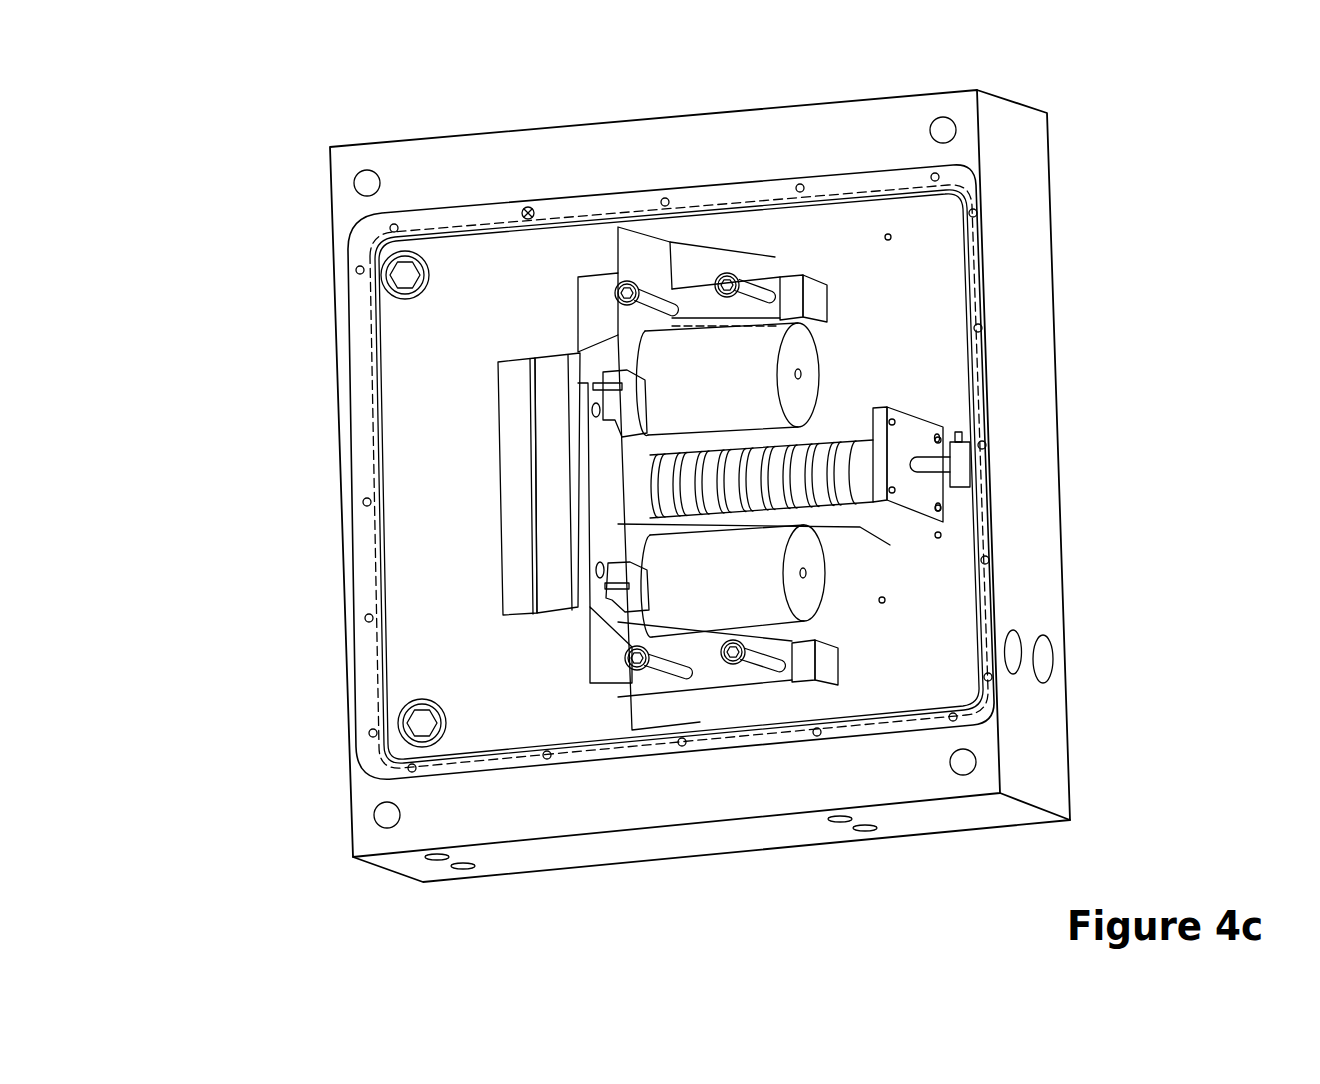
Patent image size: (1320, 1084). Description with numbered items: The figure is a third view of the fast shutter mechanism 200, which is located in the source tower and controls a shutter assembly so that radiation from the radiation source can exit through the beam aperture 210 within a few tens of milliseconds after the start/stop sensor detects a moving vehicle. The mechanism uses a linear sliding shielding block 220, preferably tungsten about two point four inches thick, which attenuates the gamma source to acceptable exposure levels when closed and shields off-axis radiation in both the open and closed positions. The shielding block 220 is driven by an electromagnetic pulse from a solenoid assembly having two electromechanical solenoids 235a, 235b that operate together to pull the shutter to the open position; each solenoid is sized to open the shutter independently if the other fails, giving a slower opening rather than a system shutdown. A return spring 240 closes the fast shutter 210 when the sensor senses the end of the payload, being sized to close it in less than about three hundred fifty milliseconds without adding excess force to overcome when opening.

The fast shutter mechanism 200 is at (293, 222).
The beam aperture 210 is at (513, 542).
The linear sliding shielding block 220 is at (552, 498).
The electromechanical solenoid 235a is at (815, 360).
The electromechanical solenoid 235b is at (713, 592).
The return spring 240 is at (838, 505).